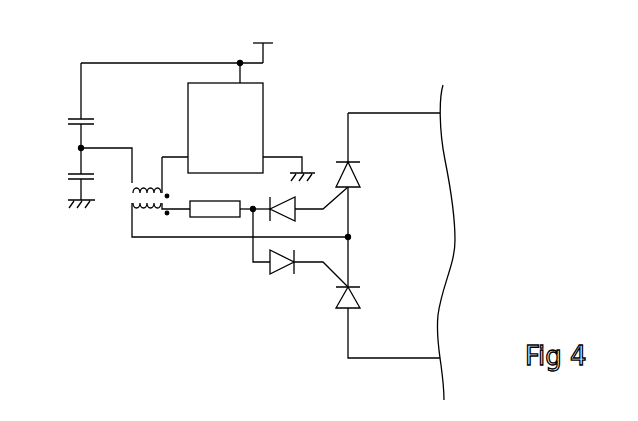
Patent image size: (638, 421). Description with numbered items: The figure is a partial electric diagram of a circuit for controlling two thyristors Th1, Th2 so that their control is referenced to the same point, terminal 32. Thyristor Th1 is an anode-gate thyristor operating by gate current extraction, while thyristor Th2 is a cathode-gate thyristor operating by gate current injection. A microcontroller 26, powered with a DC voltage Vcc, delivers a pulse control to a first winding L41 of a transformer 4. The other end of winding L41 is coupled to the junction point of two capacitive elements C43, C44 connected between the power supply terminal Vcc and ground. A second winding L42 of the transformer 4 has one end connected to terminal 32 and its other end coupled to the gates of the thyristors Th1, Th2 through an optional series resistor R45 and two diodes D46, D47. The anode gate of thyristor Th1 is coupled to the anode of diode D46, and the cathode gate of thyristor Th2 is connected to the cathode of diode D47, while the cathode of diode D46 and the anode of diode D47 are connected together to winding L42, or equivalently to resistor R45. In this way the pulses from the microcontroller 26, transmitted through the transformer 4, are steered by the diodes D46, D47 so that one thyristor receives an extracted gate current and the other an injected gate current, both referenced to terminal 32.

The transformer 4 is at (129, 196).
The microcontroller 26 is at (263, 100).
The terminal 32 is at (349, 236).
The capacitive element C43 is at (60, 122).
The capacitive element C44 is at (60, 187).
The first winding L41 is at (142, 182).
The second winding L42 is at (148, 213).
The series resistor R45 is at (230, 198).
The diode D46 is at (309, 210).
The diode D47 is at (300, 251).
The thyristor Th1 is at (369, 173).
The thyristor Th2 is at (369, 298).
The DC voltage Vcc is at (264, 32).